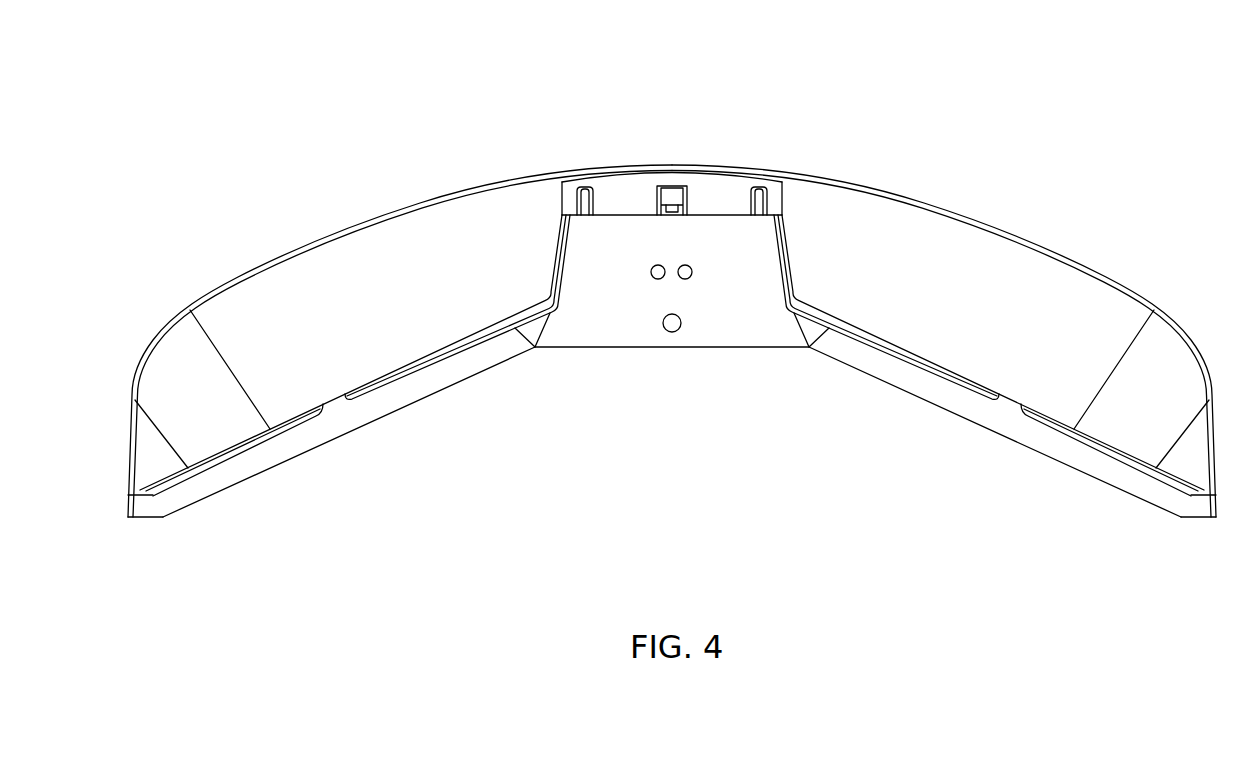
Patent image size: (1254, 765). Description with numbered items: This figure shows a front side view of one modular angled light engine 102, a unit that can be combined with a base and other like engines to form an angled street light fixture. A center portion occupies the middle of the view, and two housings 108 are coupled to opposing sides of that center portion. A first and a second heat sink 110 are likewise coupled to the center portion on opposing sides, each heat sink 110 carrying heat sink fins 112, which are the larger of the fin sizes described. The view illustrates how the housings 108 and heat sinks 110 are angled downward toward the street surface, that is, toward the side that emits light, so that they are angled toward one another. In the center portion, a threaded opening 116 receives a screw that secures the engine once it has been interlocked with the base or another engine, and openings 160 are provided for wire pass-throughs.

The modular angled light engine 102 is at (893, 82).
The housing 108 is at (313, 452).
The heat sink 110 is at (403, 213).
The heat sink fin 112 is at (258, 298).
The threaded opening 116 is at (668, 331).
The opening 160 is at (682, 279).